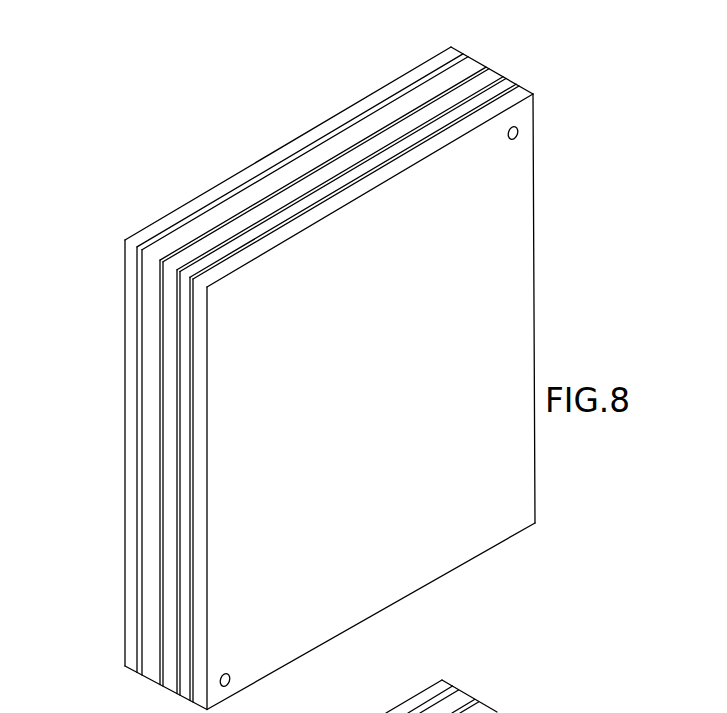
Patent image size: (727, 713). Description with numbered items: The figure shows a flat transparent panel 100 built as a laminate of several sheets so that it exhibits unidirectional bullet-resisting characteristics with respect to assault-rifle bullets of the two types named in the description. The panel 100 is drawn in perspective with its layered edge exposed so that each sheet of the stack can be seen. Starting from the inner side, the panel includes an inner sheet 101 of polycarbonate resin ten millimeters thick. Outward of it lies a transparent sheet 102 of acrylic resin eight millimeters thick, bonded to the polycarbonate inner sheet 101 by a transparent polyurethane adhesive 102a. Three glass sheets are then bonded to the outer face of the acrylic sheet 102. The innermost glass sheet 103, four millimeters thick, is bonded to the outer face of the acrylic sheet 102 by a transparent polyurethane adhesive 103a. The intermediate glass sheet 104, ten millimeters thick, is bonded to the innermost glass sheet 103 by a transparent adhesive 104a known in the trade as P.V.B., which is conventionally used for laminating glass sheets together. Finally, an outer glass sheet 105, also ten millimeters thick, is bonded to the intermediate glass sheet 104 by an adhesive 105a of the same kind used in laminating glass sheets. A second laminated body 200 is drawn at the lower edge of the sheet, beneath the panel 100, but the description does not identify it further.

The panel 100 is at (400, 37).
The inner sheet 101 is at (200, 315).
The transparent sheet 102 is at (182, 353).
The transparent polyurethane adhesive 102a is at (192, 412).
The innermost glass sheet 103 is at (190, 465).
The transparent polyurethane adhesive 103a is at (178, 517).
The intermediate glass sheet 104 is at (158, 568).
The transparent adhesive 104a is at (163, 602).
The outer glass sheet 105 is at (130, 644).
The adhesive 105a is at (127, 667).
The second laminated card body 200 is at (590, 688).